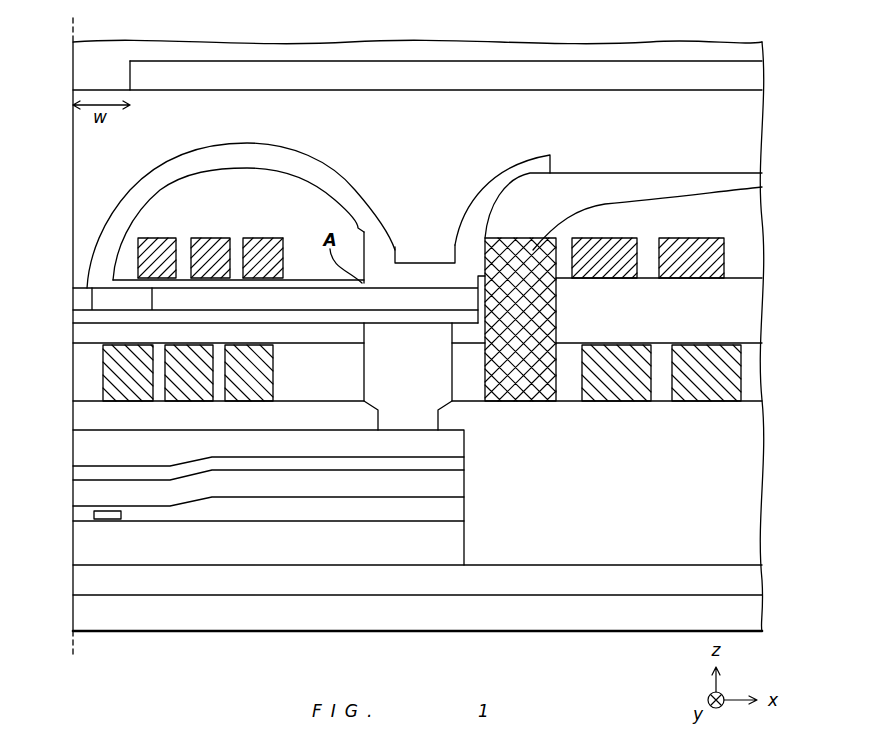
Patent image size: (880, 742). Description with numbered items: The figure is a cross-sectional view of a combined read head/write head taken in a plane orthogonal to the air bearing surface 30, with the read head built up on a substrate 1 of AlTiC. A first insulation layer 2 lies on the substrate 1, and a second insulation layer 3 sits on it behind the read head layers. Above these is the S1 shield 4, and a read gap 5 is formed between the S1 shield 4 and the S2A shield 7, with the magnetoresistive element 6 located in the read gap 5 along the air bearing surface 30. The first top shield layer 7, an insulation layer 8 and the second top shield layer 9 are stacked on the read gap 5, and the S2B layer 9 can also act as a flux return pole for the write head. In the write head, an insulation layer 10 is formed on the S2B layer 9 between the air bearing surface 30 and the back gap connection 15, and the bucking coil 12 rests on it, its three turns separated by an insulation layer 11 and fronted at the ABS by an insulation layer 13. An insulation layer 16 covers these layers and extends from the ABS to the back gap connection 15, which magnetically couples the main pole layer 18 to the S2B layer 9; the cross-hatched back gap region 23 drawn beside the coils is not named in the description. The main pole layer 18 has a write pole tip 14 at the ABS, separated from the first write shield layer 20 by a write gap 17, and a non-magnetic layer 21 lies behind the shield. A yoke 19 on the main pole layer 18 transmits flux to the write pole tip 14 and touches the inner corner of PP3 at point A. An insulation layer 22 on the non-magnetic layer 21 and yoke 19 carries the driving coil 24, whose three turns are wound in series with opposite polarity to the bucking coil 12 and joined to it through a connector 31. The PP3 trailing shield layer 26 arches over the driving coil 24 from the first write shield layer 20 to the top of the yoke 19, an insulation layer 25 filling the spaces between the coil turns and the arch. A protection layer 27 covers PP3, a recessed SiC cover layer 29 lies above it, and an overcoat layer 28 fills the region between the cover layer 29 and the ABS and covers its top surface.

The substrate 1 is at (758, 614).
The first insulation layer 2 is at (82, 605).
The second insulation layer 3 is at (82, 575).
The S1 shield 4 is at (82, 550).
The read gap 5 is at (132, 516).
The magnetoresistive element 6 is at (95, 516).
The first top shield (S2A) layer 7 is at (82, 493).
The insulation layer 8 is at (82, 470).
The second top shield (S2B) layer 9 is at (82, 450).
The insulation layer 10 is at (82, 420).
The insulation layer 11 is at (103, 402).
The bucking coil 12 is at (243, 363).
The insulation layer 13 is at (82, 360).
The write pole tip 14 is at (82, 316).
The back gap connection 15 is at (420, 412).
The insulation layer 16 is at (82, 338).
The write gap 17 is at (82, 305).
The main pole layer 18 is at (425, 318).
The yoke 19 is at (390, 300).
The first write shield layer 20 is at (103, 296).
The non-magnetic layer 21 is at (102, 291).
The insulation layer 22 is at (113, 277).
The back gap magnetic connection 23 is at (520, 319).
The driving coil 24 is at (172, 258).
The insulation layer 25 is at (123, 257).
The PP3 trailing shield layer 26 is at (148, 190).
The protection layer 27 is at (82, 130).
The overcoat layer 28 is at (85, 72).
The cover layer 29 is at (752, 74).
The air bearing surface 30 is at (73, 18).
The connector 31 is at (748, 187).